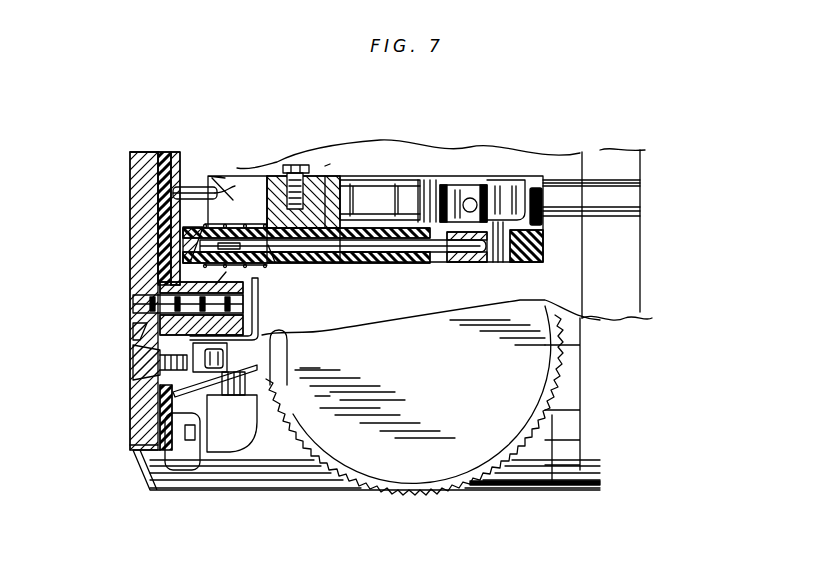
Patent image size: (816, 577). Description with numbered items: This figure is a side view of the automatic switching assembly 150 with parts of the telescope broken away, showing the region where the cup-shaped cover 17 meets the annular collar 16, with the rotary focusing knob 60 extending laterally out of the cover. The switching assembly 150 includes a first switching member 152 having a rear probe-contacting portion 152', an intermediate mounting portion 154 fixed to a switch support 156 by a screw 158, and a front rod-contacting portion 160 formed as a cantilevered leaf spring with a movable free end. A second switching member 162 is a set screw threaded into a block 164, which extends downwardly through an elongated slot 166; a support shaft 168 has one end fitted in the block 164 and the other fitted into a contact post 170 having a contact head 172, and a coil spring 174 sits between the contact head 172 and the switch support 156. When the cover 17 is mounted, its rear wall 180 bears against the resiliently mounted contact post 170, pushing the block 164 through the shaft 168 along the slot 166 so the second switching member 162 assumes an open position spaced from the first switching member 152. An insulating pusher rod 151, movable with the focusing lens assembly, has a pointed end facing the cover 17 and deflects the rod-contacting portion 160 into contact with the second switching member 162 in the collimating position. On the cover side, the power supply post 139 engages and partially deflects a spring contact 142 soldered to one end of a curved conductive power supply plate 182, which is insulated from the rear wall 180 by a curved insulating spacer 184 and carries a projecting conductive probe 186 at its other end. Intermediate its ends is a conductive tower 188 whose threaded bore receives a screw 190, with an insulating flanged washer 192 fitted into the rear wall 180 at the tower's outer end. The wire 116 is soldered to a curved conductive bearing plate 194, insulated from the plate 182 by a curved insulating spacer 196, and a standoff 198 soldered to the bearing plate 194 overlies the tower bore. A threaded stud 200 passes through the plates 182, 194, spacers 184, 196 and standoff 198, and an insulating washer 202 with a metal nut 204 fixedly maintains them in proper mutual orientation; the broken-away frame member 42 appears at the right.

The cover 17 is at (128, 223).
The rear wall 180 is at (137, 152).
The power supply plate 182 is at (163, 152).
The insulating spacer 184 is at (158, 152).
The probe 186 is at (190, 181).
The bearing plate 194 is at (181, 184).
The insulating spacer 196 is at (172, 163).
The contact head 172 is at (180, 236).
The contact post 170 is at (190, 226).
The rear probe-contacting portion 152' is at (236, 234).
The switching assembly 150 is at (300, 280).
The first switching member 152 is at (348, 170).
The intermediate mounting portion 154 is at (262, 174).
The screw 158 is at (326, 165).
The switch support 156 is at (336, 200).
The front rod-contacting portion 160 is at (430, 197).
The second switching member 162 is at (479, 180).
The block 164 is at (493, 193).
The elongated slot 166 is at (490, 265).
The support shaft 168 is at (430, 263).
The pusher rod 151 is at (578, 190).
The frame member 42 is at (648, 258).
The standoff 198 is at (262, 315).
The coil spring 174 is at (268, 246).
The tower 188 is at (236, 273).
The screw 190 is at (133, 303).
The insulating flanged washer 192 is at (133, 327).
The threaded stud 200 is at (190, 357).
The metal nut 204 is at (228, 362).
The insulating washer 202 is at (173, 393).
The power supply post 139 is at (237, 380).
The spring contact 142 is at (262, 368).
The wire 116 is at (180, 415).
The collar 16 is at (570, 484).
The rotary focusing knob 60 is at (458, 488).